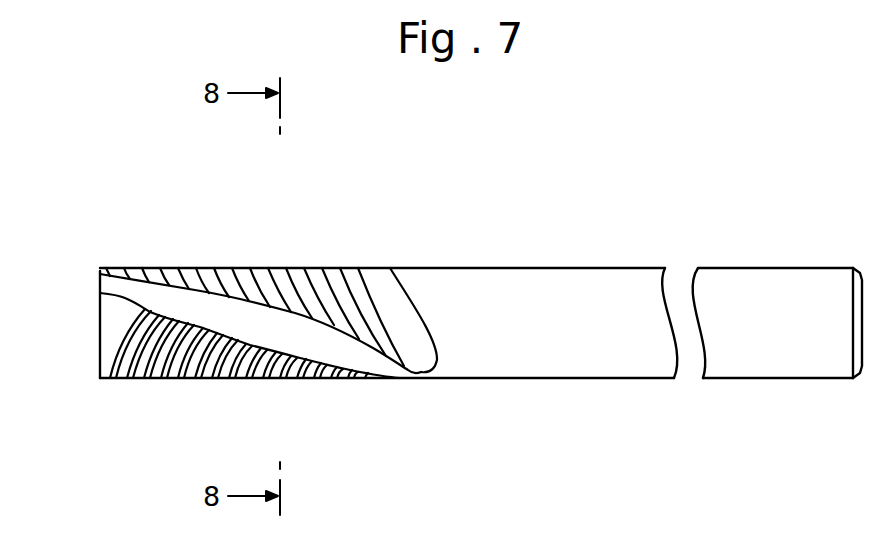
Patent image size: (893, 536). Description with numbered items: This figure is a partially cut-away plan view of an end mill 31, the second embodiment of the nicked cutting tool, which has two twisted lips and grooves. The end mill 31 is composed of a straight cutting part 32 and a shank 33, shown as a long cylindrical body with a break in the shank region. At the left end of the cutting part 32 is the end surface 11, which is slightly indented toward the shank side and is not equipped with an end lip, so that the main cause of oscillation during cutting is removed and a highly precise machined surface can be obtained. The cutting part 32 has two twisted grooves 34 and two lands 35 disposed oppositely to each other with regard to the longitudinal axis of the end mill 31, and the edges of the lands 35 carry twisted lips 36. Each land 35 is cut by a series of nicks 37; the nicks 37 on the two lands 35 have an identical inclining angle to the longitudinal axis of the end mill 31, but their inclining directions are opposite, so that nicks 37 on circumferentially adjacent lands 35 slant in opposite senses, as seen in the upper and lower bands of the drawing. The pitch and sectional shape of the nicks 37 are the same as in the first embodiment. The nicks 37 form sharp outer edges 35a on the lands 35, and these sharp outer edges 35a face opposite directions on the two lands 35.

The end mill 31 is at (533, 387).
The cutting part 32 is at (416, 196).
The shank 33 is at (868, 195).
The twisted groove 34 is at (345, 352).
The land 35 is at (430, 313).
The sharp outer edge 35a is at (322, 273).
The twisted lip 36 is at (100, 289).
The nick 37 is at (265, 268).
The end surface 11 is at (100, 292).